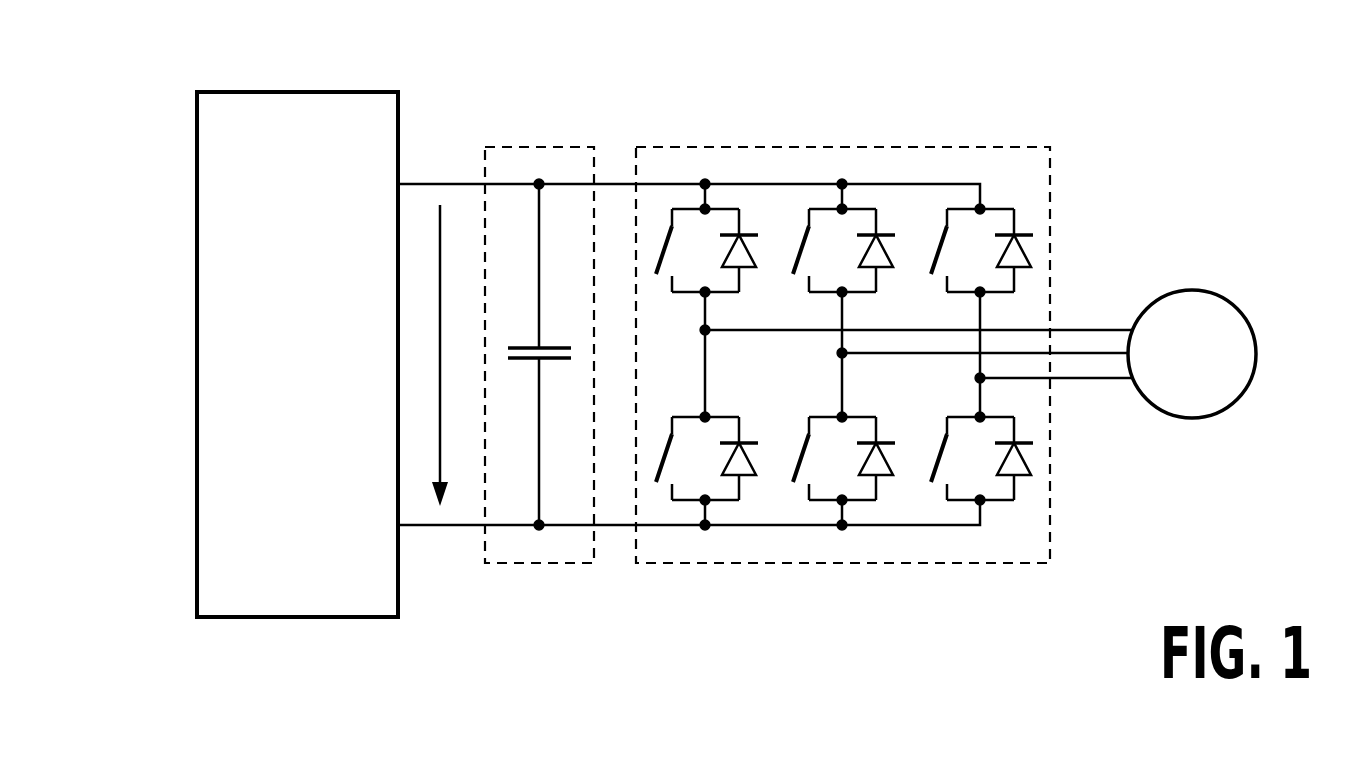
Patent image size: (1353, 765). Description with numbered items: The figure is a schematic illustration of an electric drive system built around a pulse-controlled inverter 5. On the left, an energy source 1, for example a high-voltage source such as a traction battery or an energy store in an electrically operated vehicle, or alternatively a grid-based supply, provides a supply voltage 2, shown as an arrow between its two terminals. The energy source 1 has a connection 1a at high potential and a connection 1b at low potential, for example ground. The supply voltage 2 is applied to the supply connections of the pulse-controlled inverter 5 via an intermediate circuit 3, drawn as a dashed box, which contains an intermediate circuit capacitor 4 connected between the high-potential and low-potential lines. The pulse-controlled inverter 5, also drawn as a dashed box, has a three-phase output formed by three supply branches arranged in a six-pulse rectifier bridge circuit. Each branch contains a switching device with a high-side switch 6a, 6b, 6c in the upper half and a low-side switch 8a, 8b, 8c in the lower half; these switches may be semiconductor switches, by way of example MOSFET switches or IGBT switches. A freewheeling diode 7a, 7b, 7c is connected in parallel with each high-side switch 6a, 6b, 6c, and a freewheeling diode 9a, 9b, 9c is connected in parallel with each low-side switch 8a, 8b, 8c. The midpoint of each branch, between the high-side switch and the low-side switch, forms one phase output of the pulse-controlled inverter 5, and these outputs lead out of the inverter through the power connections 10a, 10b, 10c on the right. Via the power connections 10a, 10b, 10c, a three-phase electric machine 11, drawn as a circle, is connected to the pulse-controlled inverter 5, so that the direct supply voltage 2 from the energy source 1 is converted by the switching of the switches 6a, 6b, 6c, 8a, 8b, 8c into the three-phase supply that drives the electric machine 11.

The energy source 1 is at (197, 373).
The connection 1a is at (437, 185).
The connection 1b is at (433, 527).
The supply voltage 2 is at (443, 241).
The intermediate circuit 3 is at (535, 565).
The intermediate circuit capacitor 4 is at (525, 362).
The pulse-controlled inverter 5 is at (648, 563).
The high-side switch 6a is at (652, 225).
The high-side switch 6b is at (788, 225).
The high-side switch 6c is at (927, 225).
The freewheeling diode 7a is at (756, 230).
The freewheeling diode 7b is at (893, 230).
The freewheeling diode 7c is at (1032, 230).
The low-side switch 8a is at (675, 460).
The low-side switch 8b is at (812, 460).
The low-side switch 8c is at (942, 460).
The freewheeling diode 9a is at (747, 477).
The freewheeling diode 9b is at (884, 477).
The freewheeling diode 9c is at (1025, 473).
The power connection 10a is at (1093, 328).
The power connection 10b is at (1085, 355).
The power connection 10c is at (1113, 382).
The electric machine 11 is at (1187, 290).